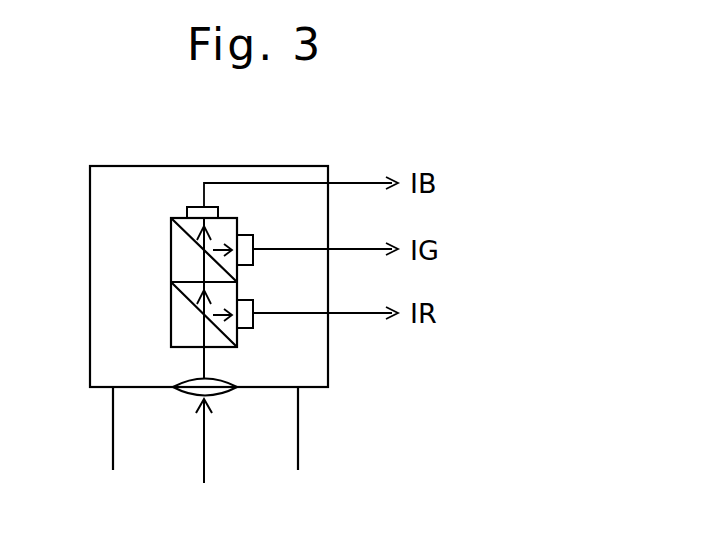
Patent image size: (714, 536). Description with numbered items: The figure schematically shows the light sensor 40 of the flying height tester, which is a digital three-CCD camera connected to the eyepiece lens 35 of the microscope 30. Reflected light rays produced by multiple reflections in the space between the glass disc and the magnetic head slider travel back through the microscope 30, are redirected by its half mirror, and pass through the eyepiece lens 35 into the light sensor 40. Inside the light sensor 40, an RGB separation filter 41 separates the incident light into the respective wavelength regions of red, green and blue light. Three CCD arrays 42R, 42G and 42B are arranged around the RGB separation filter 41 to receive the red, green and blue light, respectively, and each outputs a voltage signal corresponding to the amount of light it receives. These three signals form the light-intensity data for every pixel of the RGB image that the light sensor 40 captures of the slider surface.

The light sensor 40 is at (133, 179).
The RGB separation filter 41 is at (156, 265).
The CCD array 42B is at (187, 211).
The CCD array 42G is at (253, 243).
The CCD array 42R is at (253, 329).
The eyepiece lens 35 is at (223, 392).
The microscope 30 is at (298, 421).